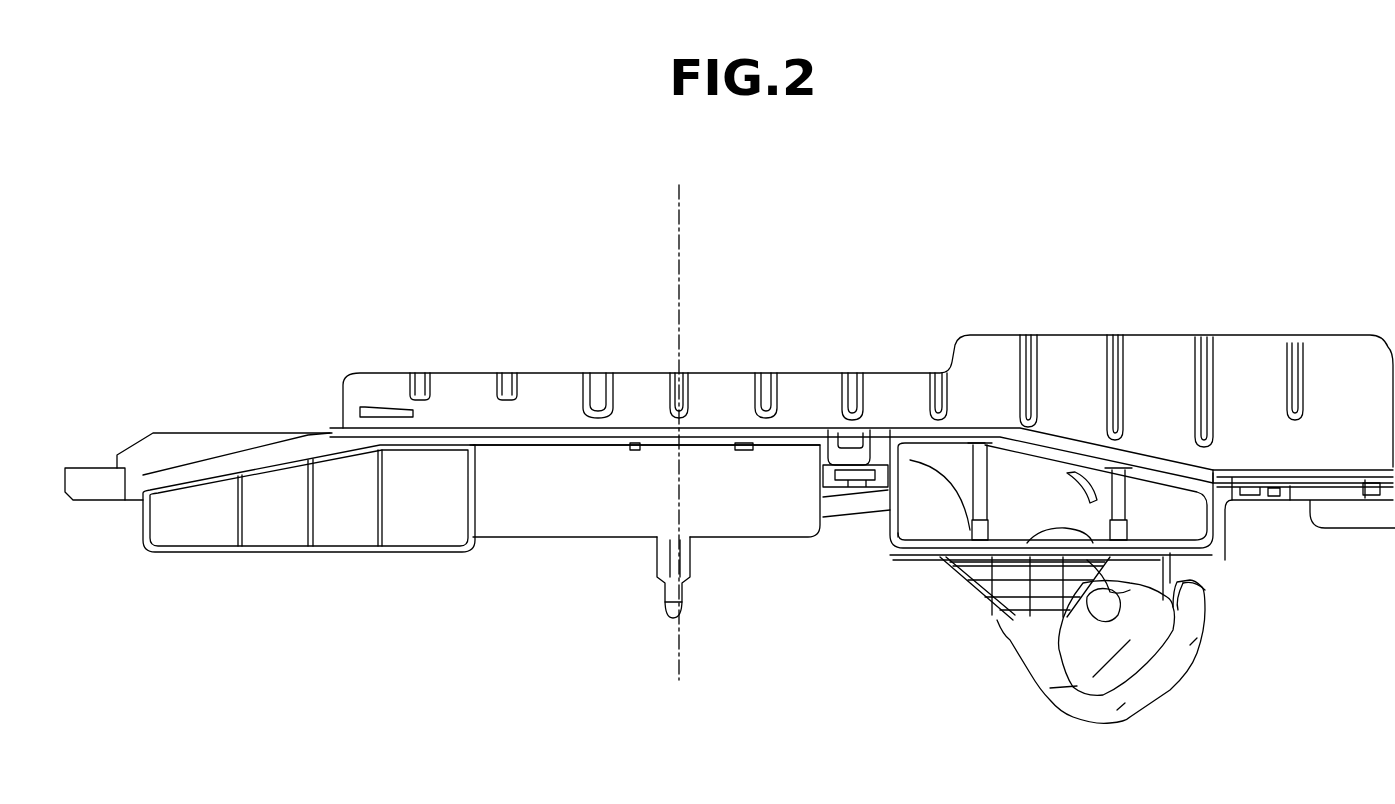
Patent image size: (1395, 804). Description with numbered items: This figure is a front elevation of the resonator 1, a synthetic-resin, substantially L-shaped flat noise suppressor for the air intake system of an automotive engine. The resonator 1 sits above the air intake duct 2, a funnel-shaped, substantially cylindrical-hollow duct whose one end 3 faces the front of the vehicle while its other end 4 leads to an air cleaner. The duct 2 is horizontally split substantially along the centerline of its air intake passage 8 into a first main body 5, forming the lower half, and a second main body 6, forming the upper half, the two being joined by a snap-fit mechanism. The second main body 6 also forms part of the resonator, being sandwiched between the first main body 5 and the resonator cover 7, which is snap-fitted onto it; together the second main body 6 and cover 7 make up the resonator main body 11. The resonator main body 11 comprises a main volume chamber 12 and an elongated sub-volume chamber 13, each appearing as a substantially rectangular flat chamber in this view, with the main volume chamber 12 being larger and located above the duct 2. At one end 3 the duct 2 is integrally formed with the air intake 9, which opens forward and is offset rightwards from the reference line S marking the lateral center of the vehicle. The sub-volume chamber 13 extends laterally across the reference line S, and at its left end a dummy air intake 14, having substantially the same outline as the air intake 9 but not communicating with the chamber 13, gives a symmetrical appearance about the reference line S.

The resonator 1 is at (575, 356).
The air intake duct 2 is at (1012, 647).
The one end of air intake duct 3 is at (930, 555).
The other end of air intake duct 4 is at (1152, 693).
The first main body 5 is at (1025, 667).
The second main body 6 is at (303, 442).
The resonator cover 7 is at (1168, 352).
The air intake passage 8 is at (922, 533).
The air intake 9 is at (902, 515).
The resonator main body 11 is at (828, 268).
The main volume chamber 12 is at (1057, 348).
The sub-volume chamber 13 is at (725, 392).
The dummy air intake 14 is at (280, 528).
The reference line S is at (681, 212).